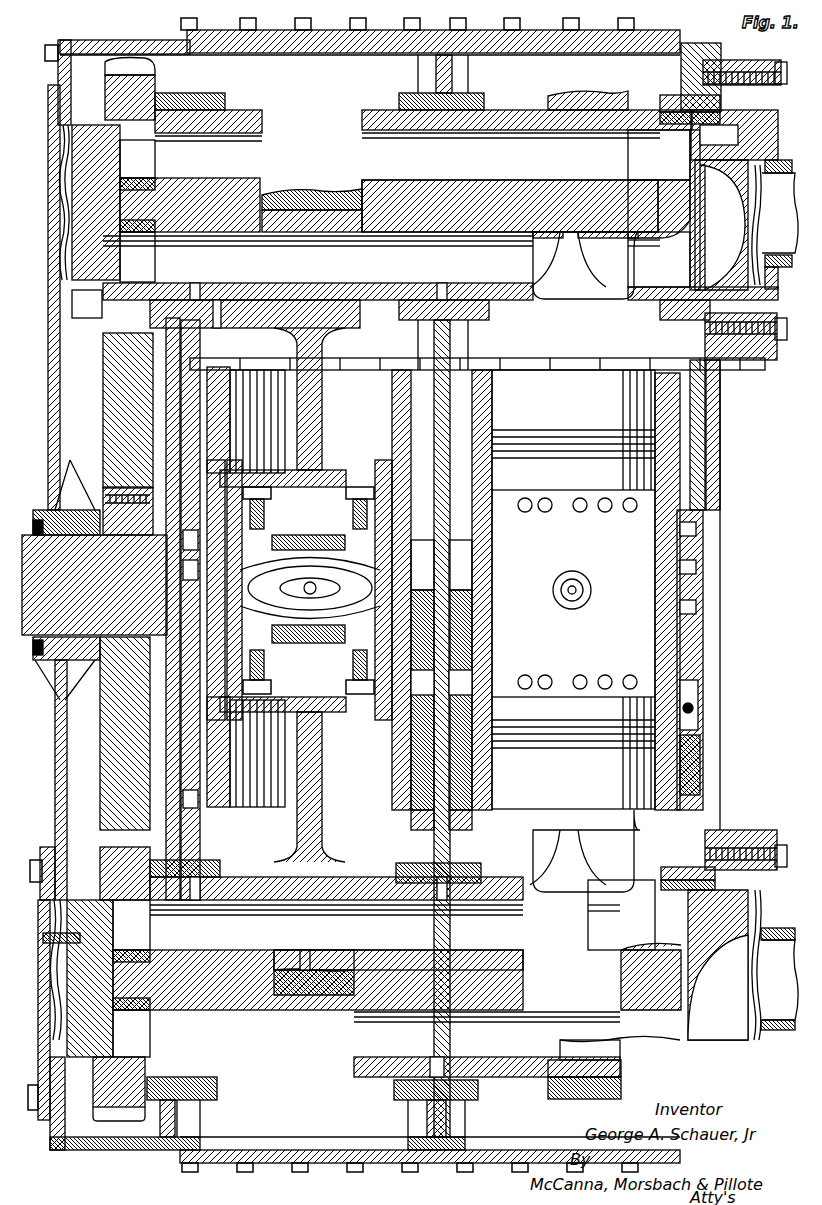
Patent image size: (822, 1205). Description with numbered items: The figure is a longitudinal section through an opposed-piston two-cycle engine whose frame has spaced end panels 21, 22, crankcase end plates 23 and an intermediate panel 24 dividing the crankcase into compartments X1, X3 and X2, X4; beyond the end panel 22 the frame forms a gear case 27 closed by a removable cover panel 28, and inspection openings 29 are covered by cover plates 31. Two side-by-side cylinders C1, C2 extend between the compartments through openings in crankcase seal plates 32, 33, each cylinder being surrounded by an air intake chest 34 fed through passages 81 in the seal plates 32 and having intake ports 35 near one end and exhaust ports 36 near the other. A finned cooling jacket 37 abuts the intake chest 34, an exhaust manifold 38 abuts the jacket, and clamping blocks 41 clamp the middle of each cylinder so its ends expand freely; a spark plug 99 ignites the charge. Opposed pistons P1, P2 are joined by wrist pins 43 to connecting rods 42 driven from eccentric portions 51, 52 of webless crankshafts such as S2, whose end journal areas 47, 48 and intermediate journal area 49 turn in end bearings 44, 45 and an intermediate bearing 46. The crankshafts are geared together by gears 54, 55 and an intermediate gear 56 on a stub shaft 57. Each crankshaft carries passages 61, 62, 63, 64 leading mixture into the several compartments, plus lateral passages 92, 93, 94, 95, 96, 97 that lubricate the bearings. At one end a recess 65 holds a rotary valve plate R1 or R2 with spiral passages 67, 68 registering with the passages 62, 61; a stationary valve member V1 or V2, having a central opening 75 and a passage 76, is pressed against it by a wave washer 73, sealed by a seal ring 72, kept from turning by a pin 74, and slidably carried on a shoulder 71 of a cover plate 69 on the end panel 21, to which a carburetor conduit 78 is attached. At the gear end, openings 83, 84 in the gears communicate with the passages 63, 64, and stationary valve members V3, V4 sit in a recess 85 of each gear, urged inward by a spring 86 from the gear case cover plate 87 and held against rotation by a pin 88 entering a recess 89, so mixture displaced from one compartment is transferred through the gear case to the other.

The end panel 21 is at (716, 468).
The end panel 22 is at (166, 444).
The crankcase end plates 23 is at (70, 42).
The intermediate panel 24 is at (452, 72).
The gear case 27 is at (60, 386).
The cover panel 28 is at (52, 356).
The inspection openings 29 is at (565, 58).
The cover plates 31 is at (452, 80).
The crankcase seal plates 32 is at (195, 356).
The crankcase seal plates 33 is at (196, 828).
The air intake chest 34 is at (714, 440).
The air intake ports 35 is at (574, 512).
The exhaust ports 36 is at (562, 676).
The cooling jacket 37 is at (706, 586).
The exhaust manifold 38 is at (700, 688).
The clamping blocks 41 is at (700, 776).
The connecting rods 42 is at (308, 790).
The wrist pins 43 is at (312, 690).
The end bearing 44 is at (682, 88).
The end bearing 45 is at (222, 95).
The intermediate bearing 46 is at (399, 110).
The end journal area 47 is at (642, 300).
The end journal area 48 is at (212, 318).
The intermediate journal area 49 is at (486, 314).
The eccentric portion 51 is at (274, 172).
The eccentric portion 52 is at (284, 193).
The gear 54 is at (118, 108).
The gear 55 is at (108, 874).
The intermediate gear 56 is at (110, 410).
The stub shaft 57 is at (42, 530).
The passage 61 is at (645, 278).
The second passage 62 is at (528, 182).
The further passage 63 is at (215, 182).
The fourth passage 64 is at (285, 285).
The recess 65 is at (630, 113).
The passage 67 is at (664, 155).
The passage 68 is at (648, 258).
The cover plate 69 is at (777, 350).
The shoulder 71 is at (778, 285).
The seal ring 72 is at (758, 245).
The wave washer 73 is at (762, 188).
The pin 74 is at (765, 145).
The central opening 75 is at (750, 1000).
The passage 76 is at (708, 212).
The conduit 78 is at (780, 162).
The passages 81 is at (418, 356).
The openings 83 is at (150, 158).
The openings 84 is at (140, 256).
The recess 85 is at (105, 133).
The spring 86 is at (60, 985).
The gear case cover plate 87 is at (46, 1043).
The pin 88 is at (48, 934).
The recess 89 is at (66, 955).
The lateral passage 92 is at (684, 210).
The lateral passage 93 is at (442, 130).
The lateral passage 94 is at (198, 130).
The lateral passage 95 is at (195, 285).
The lateral passage 96 is at (444, 284).
The lateral passage 97 is at (686, 276).
The spark plug 99 is at (310, 585).
The cylinder C1 is at (648, 599).
The cylinder C2 is at (385, 417).
The pistons P1 is at (573, 533).
The pistons P2 is at (573, 753).
The rotary valve plate R1 is at (670, 193).
The rotary valve plate R2 is at (668, 962).
The stationary valve member V1 is at (758, 210).
The stationary valve member V2 is at (766, 905).
The stationary valve member V3 is at (87, 304).
The stationary valve member V4 is at (96, 1070).
The crankcase compartment X1 is at (570, 72).
The crankcase compartment X2 is at (540, 1114).
The crankcase compartment X3 is at (310, 72).
The crankcase compartment X4 is at (430, 1114).
The crankshaft S2 is at (501, 1089).